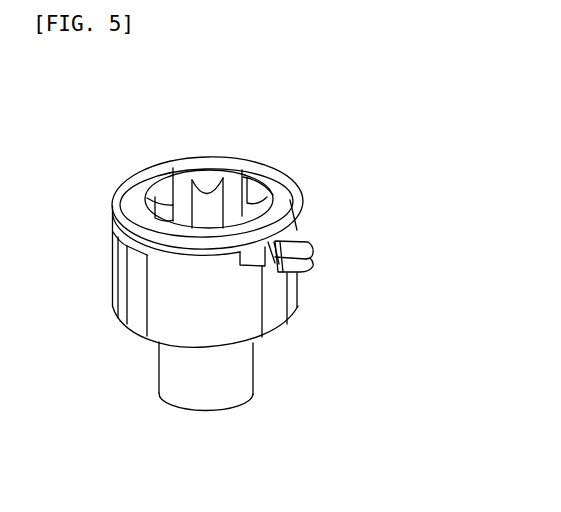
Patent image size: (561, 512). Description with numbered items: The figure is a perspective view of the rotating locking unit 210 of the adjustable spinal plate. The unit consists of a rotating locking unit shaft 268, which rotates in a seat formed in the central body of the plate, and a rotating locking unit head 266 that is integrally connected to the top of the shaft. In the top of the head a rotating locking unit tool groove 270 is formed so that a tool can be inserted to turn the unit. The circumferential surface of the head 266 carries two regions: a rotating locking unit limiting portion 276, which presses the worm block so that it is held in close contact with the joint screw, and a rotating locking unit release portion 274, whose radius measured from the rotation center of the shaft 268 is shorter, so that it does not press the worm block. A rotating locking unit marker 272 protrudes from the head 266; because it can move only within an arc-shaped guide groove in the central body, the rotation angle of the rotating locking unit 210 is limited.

The rotating locking unit 210 is at (208, 131).
The rotating locking unit head 266 is at (281, 191).
The rotating locking unit shaft 268 is at (200, 400).
The rotating locking unit tool groove 270 is at (183, 210).
The rotating locking unit marker 272 is at (292, 237).
The rotating locking unit release portion 274 is at (137, 277).
The rotating locking unit limiting portion 276 is at (228, 302).